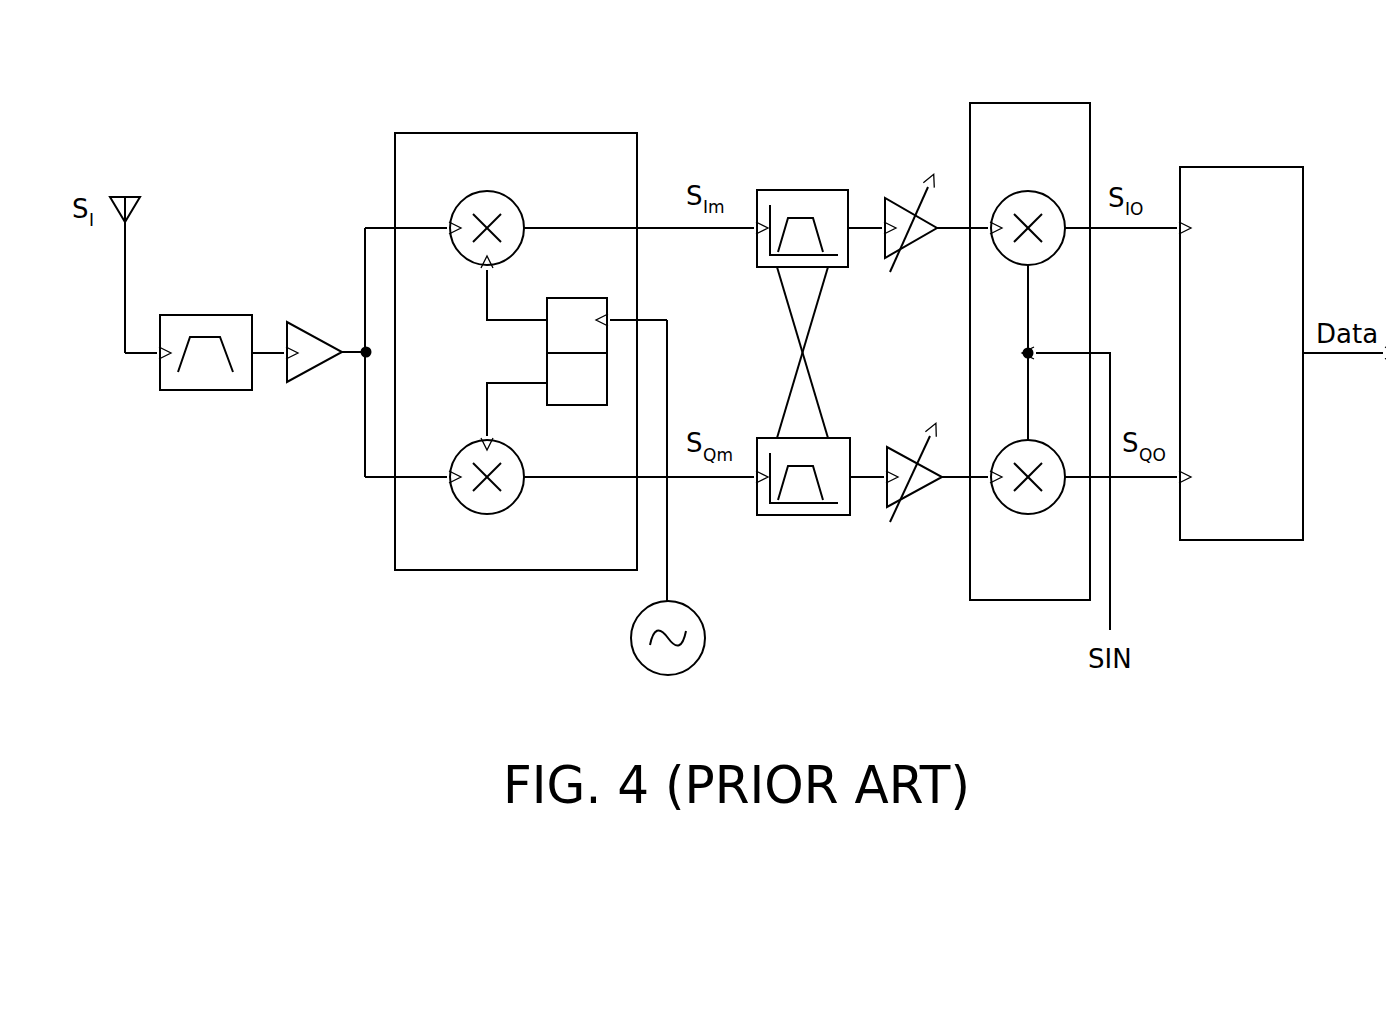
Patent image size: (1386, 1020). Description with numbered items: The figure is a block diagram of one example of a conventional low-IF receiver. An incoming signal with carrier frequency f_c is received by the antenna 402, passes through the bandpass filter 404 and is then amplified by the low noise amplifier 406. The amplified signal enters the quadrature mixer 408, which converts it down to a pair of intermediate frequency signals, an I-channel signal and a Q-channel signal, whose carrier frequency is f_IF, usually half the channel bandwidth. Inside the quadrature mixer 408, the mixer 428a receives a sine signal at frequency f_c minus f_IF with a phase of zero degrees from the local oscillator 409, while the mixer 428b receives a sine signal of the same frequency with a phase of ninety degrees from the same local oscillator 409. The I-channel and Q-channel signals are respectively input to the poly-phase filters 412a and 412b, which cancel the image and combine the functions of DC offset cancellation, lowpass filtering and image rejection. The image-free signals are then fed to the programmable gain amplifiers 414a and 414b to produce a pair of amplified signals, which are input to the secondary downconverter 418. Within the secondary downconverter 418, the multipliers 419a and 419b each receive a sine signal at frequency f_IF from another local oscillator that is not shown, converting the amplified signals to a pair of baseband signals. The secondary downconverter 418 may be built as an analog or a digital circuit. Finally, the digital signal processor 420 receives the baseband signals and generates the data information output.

The antenna 402 is at (125, 193).
The bandpass filter 404 is at (197, 314).
The low noise amplifier 406 is at (312, 332).
The quadrature mixer 408 is at (488, 132).
The local oscillator 409 is at (672, 675).
The poly-phase filter 412a is at (800, 190).
The poly-phase filter 412b is at (805, 517).
The programmable gain amplifier 414a is at (905, 204).
The programmable gain amplifier 414b is at (908, 452).
The secondary downconverter 418 is at (1030, 103).
The multiplier 419a is at (1028, 190).
The multiplier 419b is at (1030, 515).
The digital signal processor 420 is at (1243, 167).
The mixer 428a is at (488, 191).
The mixer 428b is at (488, 514).